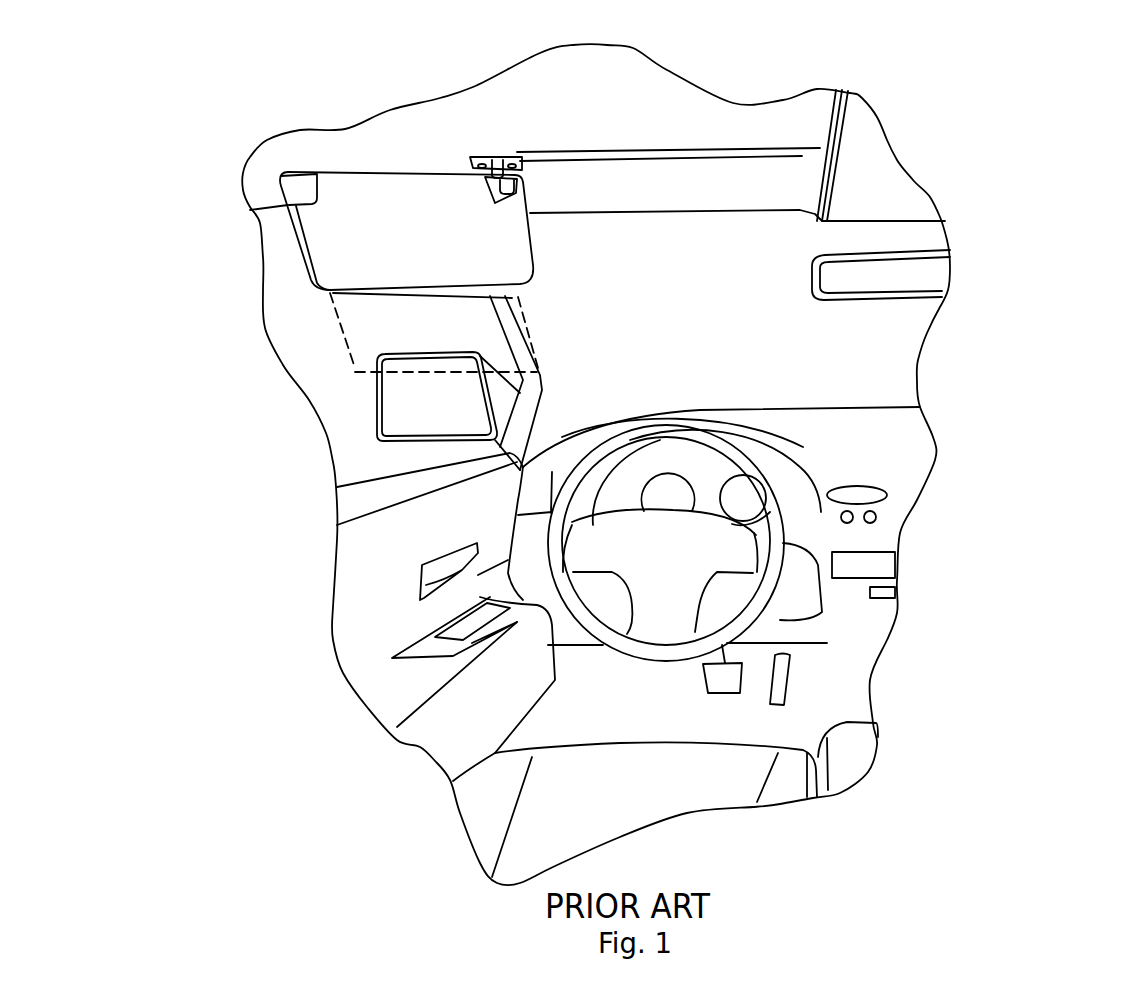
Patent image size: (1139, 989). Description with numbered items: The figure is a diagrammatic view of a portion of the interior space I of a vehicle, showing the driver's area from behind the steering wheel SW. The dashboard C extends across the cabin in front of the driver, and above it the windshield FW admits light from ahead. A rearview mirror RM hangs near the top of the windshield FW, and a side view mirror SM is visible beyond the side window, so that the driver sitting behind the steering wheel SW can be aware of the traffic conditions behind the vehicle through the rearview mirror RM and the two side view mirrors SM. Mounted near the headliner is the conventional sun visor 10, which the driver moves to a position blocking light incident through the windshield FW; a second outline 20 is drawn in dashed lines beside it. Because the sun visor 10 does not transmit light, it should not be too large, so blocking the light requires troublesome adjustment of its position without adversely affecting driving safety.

The windshield FW is at (738, 257).
The interior space I is at (953, 190).
The rearview mirror RM is at (897, 270).
The dashboard C is at (903, 443).
The steering wheel SW is at (760, 597).
The sun visor 10 is at (335, 257).
The auxiliary sun visor (shown in dashed position) 20 is at (359, 340).
The side view mirror SM is at (400, 417).